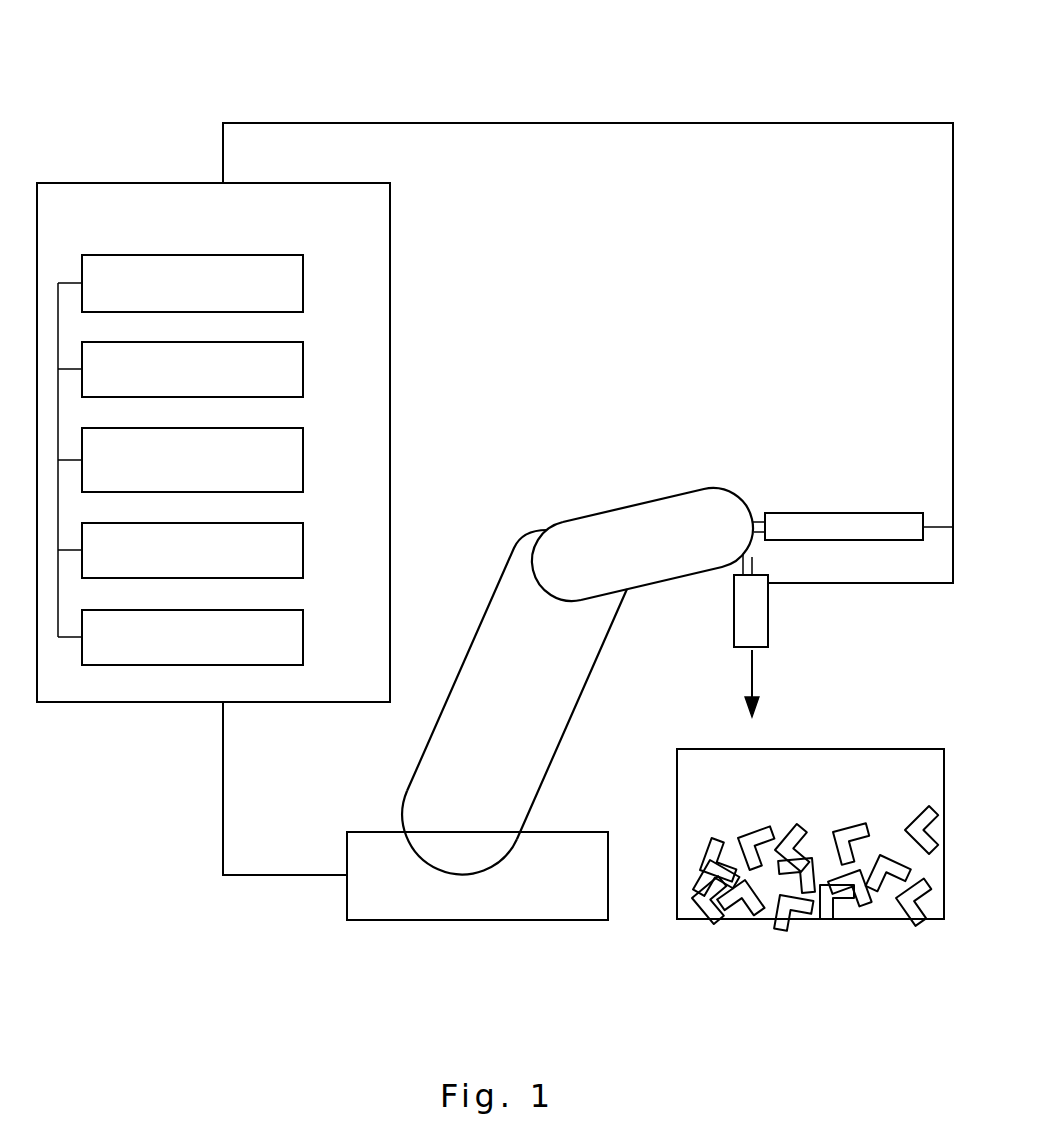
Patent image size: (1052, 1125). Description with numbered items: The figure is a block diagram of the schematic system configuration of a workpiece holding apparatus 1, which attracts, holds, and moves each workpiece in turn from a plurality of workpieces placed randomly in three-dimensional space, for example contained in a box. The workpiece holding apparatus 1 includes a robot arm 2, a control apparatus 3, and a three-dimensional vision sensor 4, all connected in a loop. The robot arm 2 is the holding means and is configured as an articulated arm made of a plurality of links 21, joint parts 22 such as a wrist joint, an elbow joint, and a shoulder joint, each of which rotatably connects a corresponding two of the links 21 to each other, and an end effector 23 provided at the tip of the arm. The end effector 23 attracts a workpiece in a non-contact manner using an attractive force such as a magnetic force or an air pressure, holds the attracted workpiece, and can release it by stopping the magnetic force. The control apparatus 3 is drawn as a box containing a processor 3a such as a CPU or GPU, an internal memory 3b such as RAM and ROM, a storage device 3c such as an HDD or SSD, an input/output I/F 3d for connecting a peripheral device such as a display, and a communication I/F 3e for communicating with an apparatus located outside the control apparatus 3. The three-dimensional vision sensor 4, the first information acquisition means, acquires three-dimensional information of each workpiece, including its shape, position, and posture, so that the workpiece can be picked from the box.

The workpiece holding apparatus 1 is at (456, 63).
The robot arm 2 is at (527, 452).
The control apparatus 3 is at (103, 183).
The processor 3a is at (304, 282).
The internal memory 3b is at (304, 368).
The storage device 3c is at (304, 458).
The input/output I/F 3d is at (304, 548).
The communication I/F 3e is at (304, 633).
The 3D vision sensor 4 is at (830, 512).
The links 21 is at (628, 535).
The joint parts 22 is at (541, 566).
The end effector 23 is at (769, 611).